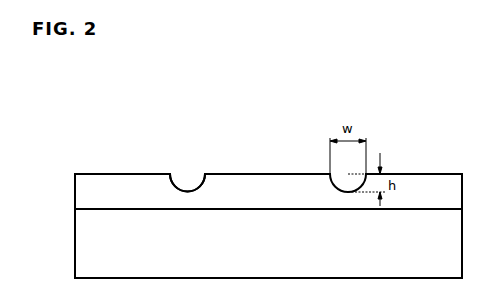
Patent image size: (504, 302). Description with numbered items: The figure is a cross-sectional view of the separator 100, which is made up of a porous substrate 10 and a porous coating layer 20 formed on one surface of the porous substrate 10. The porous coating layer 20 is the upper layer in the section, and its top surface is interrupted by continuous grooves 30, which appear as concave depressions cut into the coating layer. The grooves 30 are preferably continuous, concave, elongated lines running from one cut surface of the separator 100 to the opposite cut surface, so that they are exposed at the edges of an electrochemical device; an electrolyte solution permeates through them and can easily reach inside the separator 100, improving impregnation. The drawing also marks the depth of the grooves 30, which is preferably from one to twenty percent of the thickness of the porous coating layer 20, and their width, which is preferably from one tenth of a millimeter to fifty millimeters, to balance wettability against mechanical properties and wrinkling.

The separator 100 is at (104, 121).
The porous substrate 10 is at (75, 247).
The porous coating layer 20 is at (75, 192).
The continuous grooves 30 is at (187, 177).